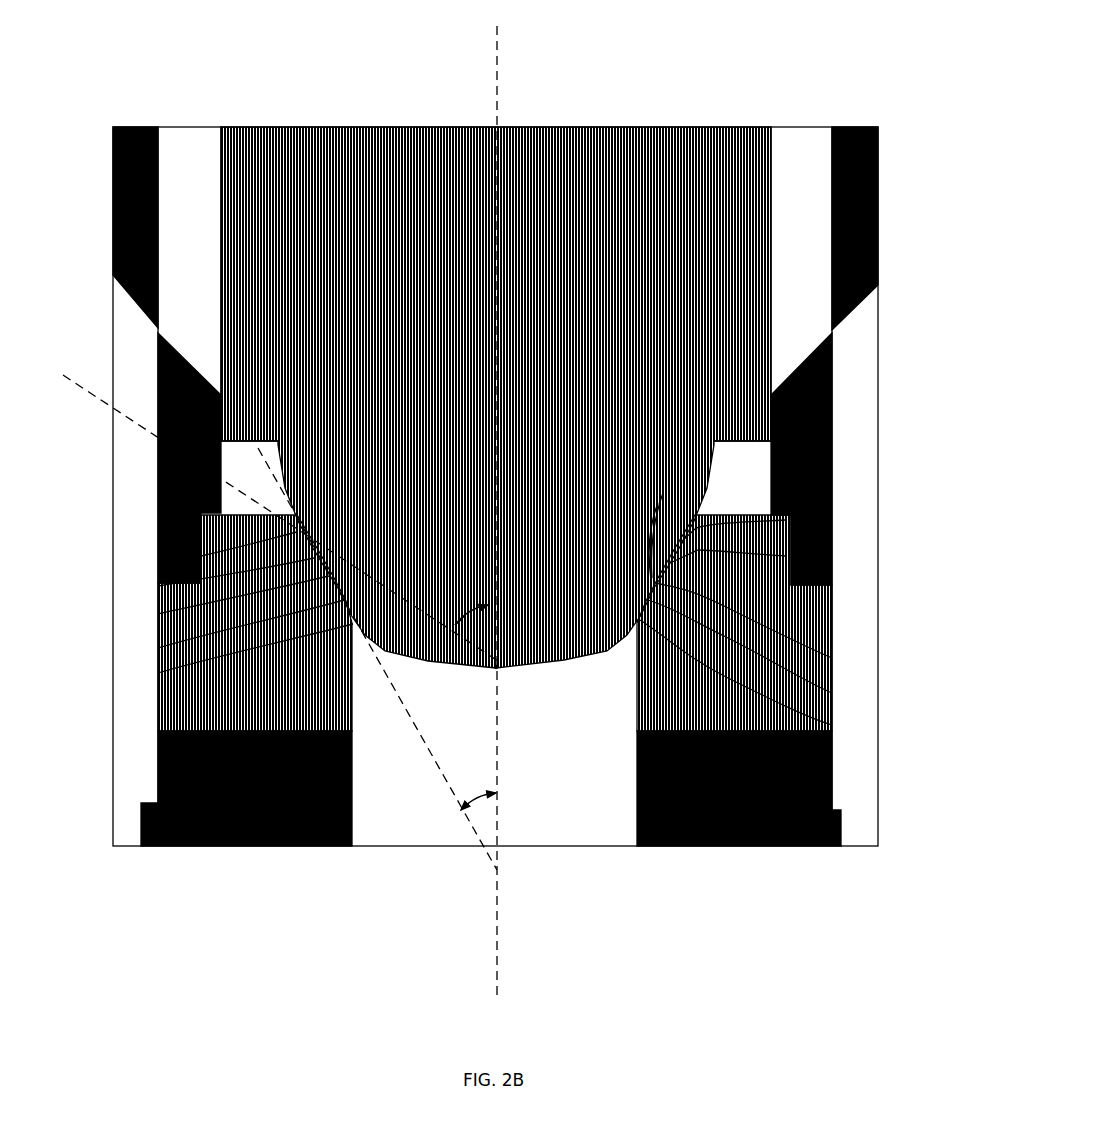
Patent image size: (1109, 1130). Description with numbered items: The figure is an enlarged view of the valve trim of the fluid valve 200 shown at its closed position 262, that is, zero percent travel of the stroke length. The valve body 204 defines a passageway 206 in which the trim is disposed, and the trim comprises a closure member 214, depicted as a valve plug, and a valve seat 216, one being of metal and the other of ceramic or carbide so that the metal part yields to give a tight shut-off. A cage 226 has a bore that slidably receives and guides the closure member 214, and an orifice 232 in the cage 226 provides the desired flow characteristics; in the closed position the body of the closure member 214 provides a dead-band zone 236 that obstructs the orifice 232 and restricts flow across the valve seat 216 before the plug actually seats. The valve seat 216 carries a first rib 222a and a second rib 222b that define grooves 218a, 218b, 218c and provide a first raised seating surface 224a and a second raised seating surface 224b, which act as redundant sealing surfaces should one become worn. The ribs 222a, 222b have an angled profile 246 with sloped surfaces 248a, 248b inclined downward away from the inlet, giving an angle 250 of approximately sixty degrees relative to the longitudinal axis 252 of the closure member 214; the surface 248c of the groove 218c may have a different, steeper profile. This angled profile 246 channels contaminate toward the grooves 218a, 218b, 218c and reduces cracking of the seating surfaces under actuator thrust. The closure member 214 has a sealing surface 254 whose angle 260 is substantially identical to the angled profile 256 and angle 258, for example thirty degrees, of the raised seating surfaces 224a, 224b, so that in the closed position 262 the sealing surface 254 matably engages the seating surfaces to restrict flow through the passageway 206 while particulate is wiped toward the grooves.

The fluid valve 200 is at (772, 30).
The valve body 204 is at (862, 793).
The passageway 206 is at (105, 242).
The closure member 214 is at (262, 119).
The valve seat 216 is at (208, 667).
The groove 218a is at (824, 650).
The groove 218b is at (778, 510).
The groove 218c is at (824, 717).
The first rib 222a is at (150, 578).
The second rib 222b is at (150, 640).
The first raised seating surface 224a is at (778, 548).
The second raised seating surface 224b is at (824, 685).
The cage 226 is at (207, 387).
The orifice 232 is at (152, 212).
The dead-band zone 236 is at (766, 433).
The angled profile 246 is at (233, 489).
The sloped surface 248a is at (150, 606).
The sloped surface 248b is at (150, 548).
The surface 248c is at (150, 665).
The angle 250 is at (488, 598).
The longitudinal axis 252 is at (493, 84).
The sealing surface 254 is at (650, 495).
The angled profile 256 is at (423, 746).
The angle 258 is at (470, 795).
The angle 260 is at (705, 533).
The closed position 262 is at (712, 78).